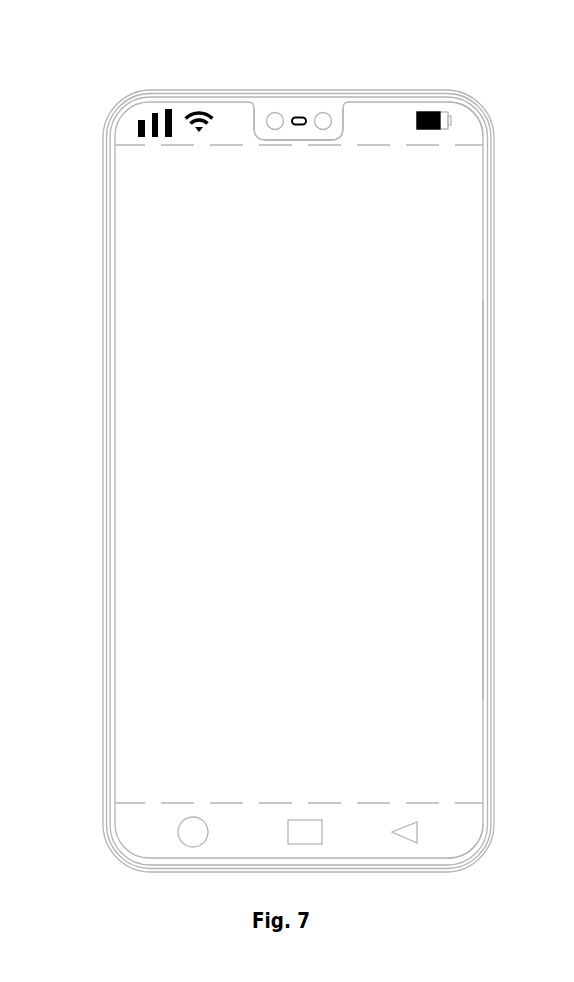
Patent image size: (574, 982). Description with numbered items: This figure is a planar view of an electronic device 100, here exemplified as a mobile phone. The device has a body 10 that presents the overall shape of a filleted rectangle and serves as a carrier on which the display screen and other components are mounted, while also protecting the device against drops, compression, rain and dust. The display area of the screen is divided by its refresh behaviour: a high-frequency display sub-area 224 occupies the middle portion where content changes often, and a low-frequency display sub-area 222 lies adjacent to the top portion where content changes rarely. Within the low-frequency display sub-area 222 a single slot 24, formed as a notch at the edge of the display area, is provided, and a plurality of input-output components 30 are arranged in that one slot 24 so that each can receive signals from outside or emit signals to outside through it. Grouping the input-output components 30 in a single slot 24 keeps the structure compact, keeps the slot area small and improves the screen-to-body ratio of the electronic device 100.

The electronic device 100 is at (60, 224).
The body 10 is at (103, 525).
The slot 24 is at (251, 108).
The input-output component 30 is at (323, 112).
The low-frequency display sub-area 222 is at (466, 128).
The high-frequency display sub-area 224 is at (478, 532).